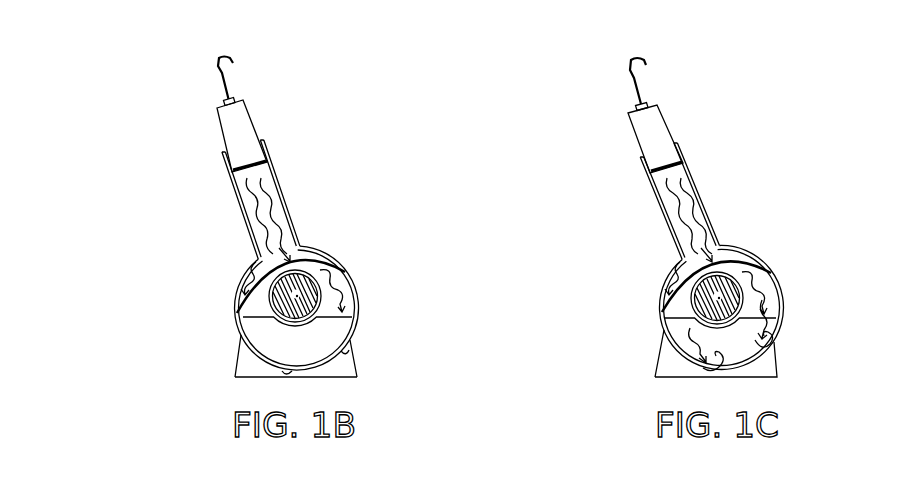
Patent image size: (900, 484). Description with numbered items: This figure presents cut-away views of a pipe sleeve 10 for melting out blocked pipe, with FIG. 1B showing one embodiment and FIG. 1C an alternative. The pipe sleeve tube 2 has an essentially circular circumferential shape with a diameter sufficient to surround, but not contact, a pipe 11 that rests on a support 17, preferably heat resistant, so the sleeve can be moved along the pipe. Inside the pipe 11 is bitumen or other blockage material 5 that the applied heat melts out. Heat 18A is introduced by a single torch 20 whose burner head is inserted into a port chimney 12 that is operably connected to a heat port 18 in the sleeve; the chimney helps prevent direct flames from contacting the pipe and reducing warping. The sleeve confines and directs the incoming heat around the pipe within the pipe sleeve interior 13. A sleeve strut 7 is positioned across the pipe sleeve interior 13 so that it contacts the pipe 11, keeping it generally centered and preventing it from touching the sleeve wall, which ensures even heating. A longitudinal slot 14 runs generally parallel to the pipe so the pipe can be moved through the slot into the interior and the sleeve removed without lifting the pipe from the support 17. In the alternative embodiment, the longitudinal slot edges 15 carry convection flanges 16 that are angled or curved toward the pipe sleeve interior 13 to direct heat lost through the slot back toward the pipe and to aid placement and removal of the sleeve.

In FIG. 1B, the pipe sleeve 10 is at (222, 253).
In FIG. 1C, the pipe sleeve 10 is at (622, 238).
In FIG. 1B, the pipe sleeve tube 2 is at (238, 293).
In FIG. 1C, the pipe sleeve tube 2 is at (670, 292).
In FIG. 1B, the port chimney 12 is at (285, 192).
In FIG. 1C, the port chimney 12 is at (698, 182).
In FIG. 1B, the torch 20 is at (247, 125).
In FIG. 1C, the torch 20 is at (670, 156).
In FIG. 1B, the heat 18A is at (273, 172).
In FIG. 1B, the heat port 18 is at (288, 227).
In FIG. 1B, the sleeve strut 7 is at (320, 265).
In FIG. 1C, the sleeve strut 7 is at (743, 263).
In FIG. 1B, the pipe 11 is at (308, 304).
In FIG. 1C, the pipe 11 is at (690, 305).
In FIG. 1B, the blockage material 5 is at (275, 306).
In FIG. 1B, the pipe sleeve interior 13 is at (345, 282).
In FIG. 1C, the pipe sleeve interior 13 is at (770, 282).
In FIG. 1B, the support 17 is at (243, 367).
In FIG. 1B, the longitudinal slot 14 is at (322, 373).
In FIG. 1B, the longitudinal slot edges 15 is at (348, 347).
In FIG. 1C, the longitudinal slot edges 15 is at (773, 343).
In FIG. 1C, the convection flange 16 is at (730, 353).